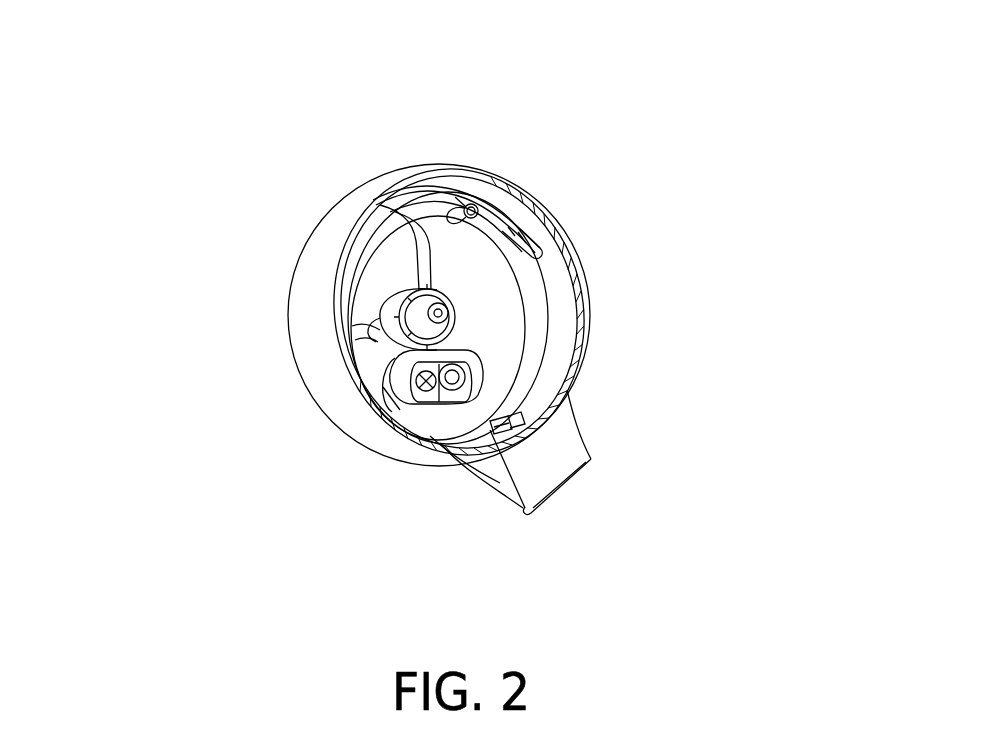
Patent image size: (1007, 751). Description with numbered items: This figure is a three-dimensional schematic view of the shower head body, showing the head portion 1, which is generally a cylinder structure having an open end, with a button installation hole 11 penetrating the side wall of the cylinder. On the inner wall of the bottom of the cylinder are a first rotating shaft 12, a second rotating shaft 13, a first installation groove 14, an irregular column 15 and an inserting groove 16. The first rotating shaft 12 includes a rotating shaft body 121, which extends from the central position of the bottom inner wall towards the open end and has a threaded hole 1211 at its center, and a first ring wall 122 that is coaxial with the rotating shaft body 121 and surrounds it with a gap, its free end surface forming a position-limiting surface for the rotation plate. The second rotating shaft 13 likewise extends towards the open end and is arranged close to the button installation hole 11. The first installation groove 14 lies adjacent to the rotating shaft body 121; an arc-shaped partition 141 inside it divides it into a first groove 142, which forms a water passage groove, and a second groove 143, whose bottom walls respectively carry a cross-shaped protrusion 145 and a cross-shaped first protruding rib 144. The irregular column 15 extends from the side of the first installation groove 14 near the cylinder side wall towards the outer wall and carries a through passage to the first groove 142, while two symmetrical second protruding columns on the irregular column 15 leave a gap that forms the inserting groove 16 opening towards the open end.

The head portion 1 is at (553, 243).
The button installation hole 11 is at (521, 230).
The first rotating shaft 12 is at (575, 287).
The rotating shaft body 121 is at (422, 290).
The threaded hole 1211 is at (403, 298).
The first ring wall 122 is at (388, 324).
The second rotating shaft 13 is at (467, 205).
The first installation groove 14 is at (480, 419).
The arc-shaped partition 141 is at (434, 365).
The first groove 142 is at (480, 370).
The second groove 143 is at (415, 372).
The cross-shaped first protruding rib 144 is at (423, 382).
The cross-shaped protrusion 145 is at (473, 375).
The irregular column 15 is at (475, 418).
The inserting groove 16 is at (538, 427).